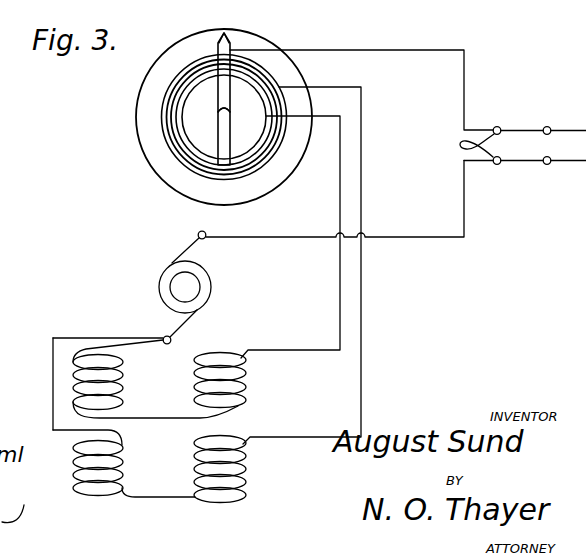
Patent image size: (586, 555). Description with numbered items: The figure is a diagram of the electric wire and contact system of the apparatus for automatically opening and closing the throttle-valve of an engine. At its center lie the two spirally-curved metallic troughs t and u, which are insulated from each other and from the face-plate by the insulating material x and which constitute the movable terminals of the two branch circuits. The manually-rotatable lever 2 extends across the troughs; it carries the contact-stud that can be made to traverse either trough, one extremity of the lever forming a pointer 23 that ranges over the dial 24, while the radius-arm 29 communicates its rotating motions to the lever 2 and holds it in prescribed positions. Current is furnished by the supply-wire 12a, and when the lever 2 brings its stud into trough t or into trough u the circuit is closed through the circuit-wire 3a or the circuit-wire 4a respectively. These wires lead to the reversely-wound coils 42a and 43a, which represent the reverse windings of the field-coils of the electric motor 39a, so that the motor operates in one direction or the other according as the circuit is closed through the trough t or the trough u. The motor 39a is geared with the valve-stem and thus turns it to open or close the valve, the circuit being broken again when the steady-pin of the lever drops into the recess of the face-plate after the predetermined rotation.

The manually-rotatable lever 2 is at (219, 50).
The pointer 23 is at (228, 37).
The dial 24 is at (271, 184).
The radius-arm 29 is at (229, 116).
The insulating material x is at (181, 85).
The spirally-curved metallic trough t is at (162, 115).
The spirally-curved metallic trough u is at (224, 117).
The circuit-wire 3a is at (363, 172).
The circuit-wire 4a is at (339, 179).
The supply-wire 12a is at (429, 238).
The electric motor 39a is at (190, 281).
The reversely-wound coil 42a is at (246, 400).
The reversely-wound coil 43a is at (246, 462).